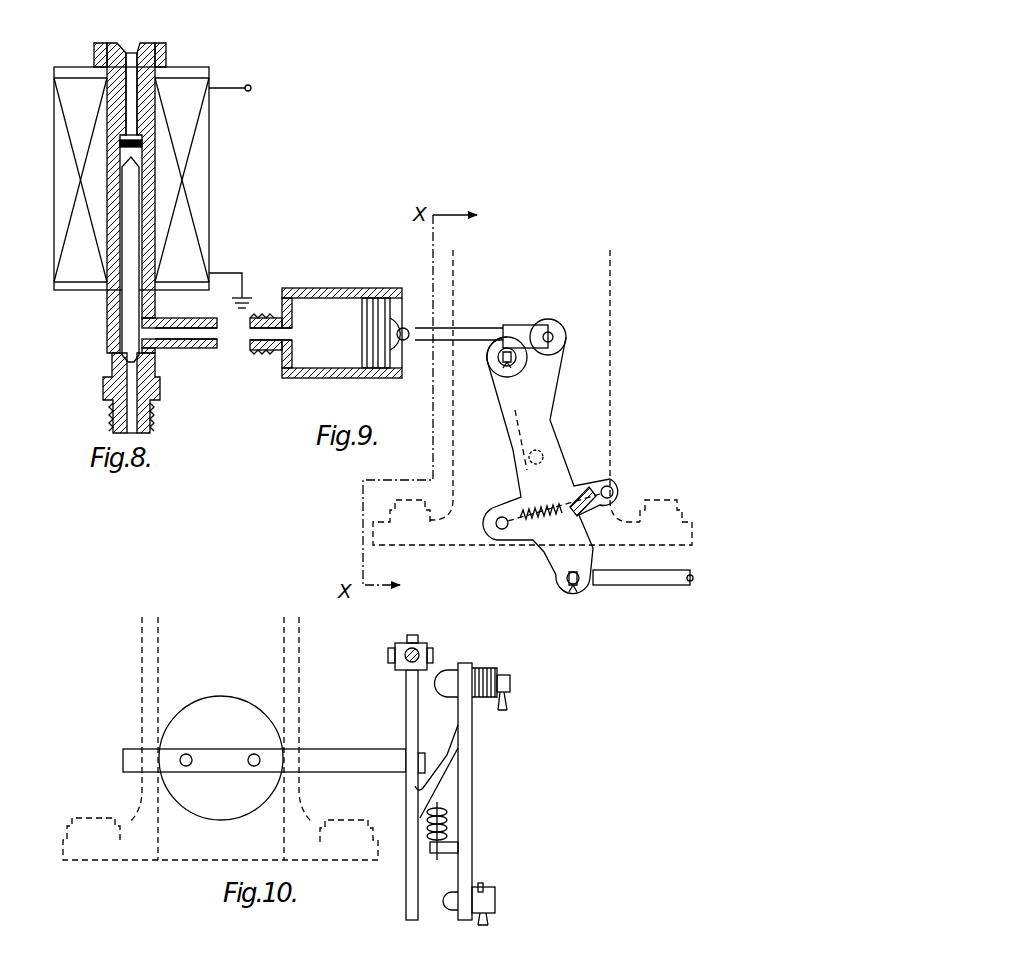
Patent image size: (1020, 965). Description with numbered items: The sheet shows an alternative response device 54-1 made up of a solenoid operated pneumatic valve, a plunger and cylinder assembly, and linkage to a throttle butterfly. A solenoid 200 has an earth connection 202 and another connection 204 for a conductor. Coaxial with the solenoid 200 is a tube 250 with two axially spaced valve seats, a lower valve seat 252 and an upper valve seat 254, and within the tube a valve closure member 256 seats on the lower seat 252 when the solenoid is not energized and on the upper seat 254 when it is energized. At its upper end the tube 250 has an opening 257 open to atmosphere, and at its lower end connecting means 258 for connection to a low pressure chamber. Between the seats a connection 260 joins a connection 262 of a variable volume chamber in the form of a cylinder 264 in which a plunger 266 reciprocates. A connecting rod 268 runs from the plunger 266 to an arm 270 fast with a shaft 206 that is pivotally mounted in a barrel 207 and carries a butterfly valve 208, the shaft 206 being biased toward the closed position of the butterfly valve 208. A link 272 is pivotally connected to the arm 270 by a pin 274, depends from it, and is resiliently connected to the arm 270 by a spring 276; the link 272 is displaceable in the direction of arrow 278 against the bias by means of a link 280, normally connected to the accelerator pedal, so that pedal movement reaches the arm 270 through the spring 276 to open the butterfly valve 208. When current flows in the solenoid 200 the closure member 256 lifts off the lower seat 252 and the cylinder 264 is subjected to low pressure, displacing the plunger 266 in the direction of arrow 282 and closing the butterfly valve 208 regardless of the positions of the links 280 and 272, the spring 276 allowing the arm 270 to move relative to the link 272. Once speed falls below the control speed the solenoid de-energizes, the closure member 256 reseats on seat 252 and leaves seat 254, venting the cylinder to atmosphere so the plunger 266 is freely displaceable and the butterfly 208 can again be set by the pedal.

In FIG. 8, the solenoid 200 is at (211, 186).
In FIG. 8, the earth connection 202 is at (232, 272).
In FIG. 8, the connection 204 is at (251, 85).
In FIG. 8, the tube 250 is at (155, 135).
In FIG. 8, the lower valve seat 252 is at (110, 366).
In FIG. 8, the upper valve seat 254 is at (145, 146).
In FIG. 8, the valve closure member 256 is at (132, 250).
In FIG. 8, the opening 257 is at (137, 43).
In FIG. 8, the connecting means 258 is at (152, 417).
In FIG. 8, the connection 260 is at (198, 347).
In FIG. 9, the connection 262 is at (280, 347).
In FIG. 9, the cylinder 264 is at (319, 286).
In FIG. 9, the plunger 266 is at (376, 370).
In FIG. 9, the connecting rod 268 is at (470, 327).
In FIG. 10, the connecting rod 268 is at (417, 653).
In FIG. 9, the arm 270 is at (556, 333).
In FIG. 10, the arm 270 is at (410, 697).
In FIG. 9, the link 272 is at (527, 405).
In FIG. 10, the link 272 is at (463, 783).
In FIG. 9, the pin 274 is at (504, 339).
In FIG. 10, the pin 274 is at (510, 683).
In FIG. 9, the spring 276 is at (578, 494).
In FIG. 10, the spring 276 is at (445, 822).
In FIG. 9, the arrow 278 is at (695, 613).
In FIG. 9, the link 280 is at (618, 587).
In FIG. 9, the arrow 282 is at (347, 389).
In FIG. 9, the barrel 207 is at (610, 333).
In FIG. 10, the barrel 207 is at (160, 656).
In FIG. 10, the shaft 206 is at (337, 758).
In FIG. 10, the butterfly valve 208 is at (208, 712).
In FIG. 9, the device 54-1 is at (318, 222).